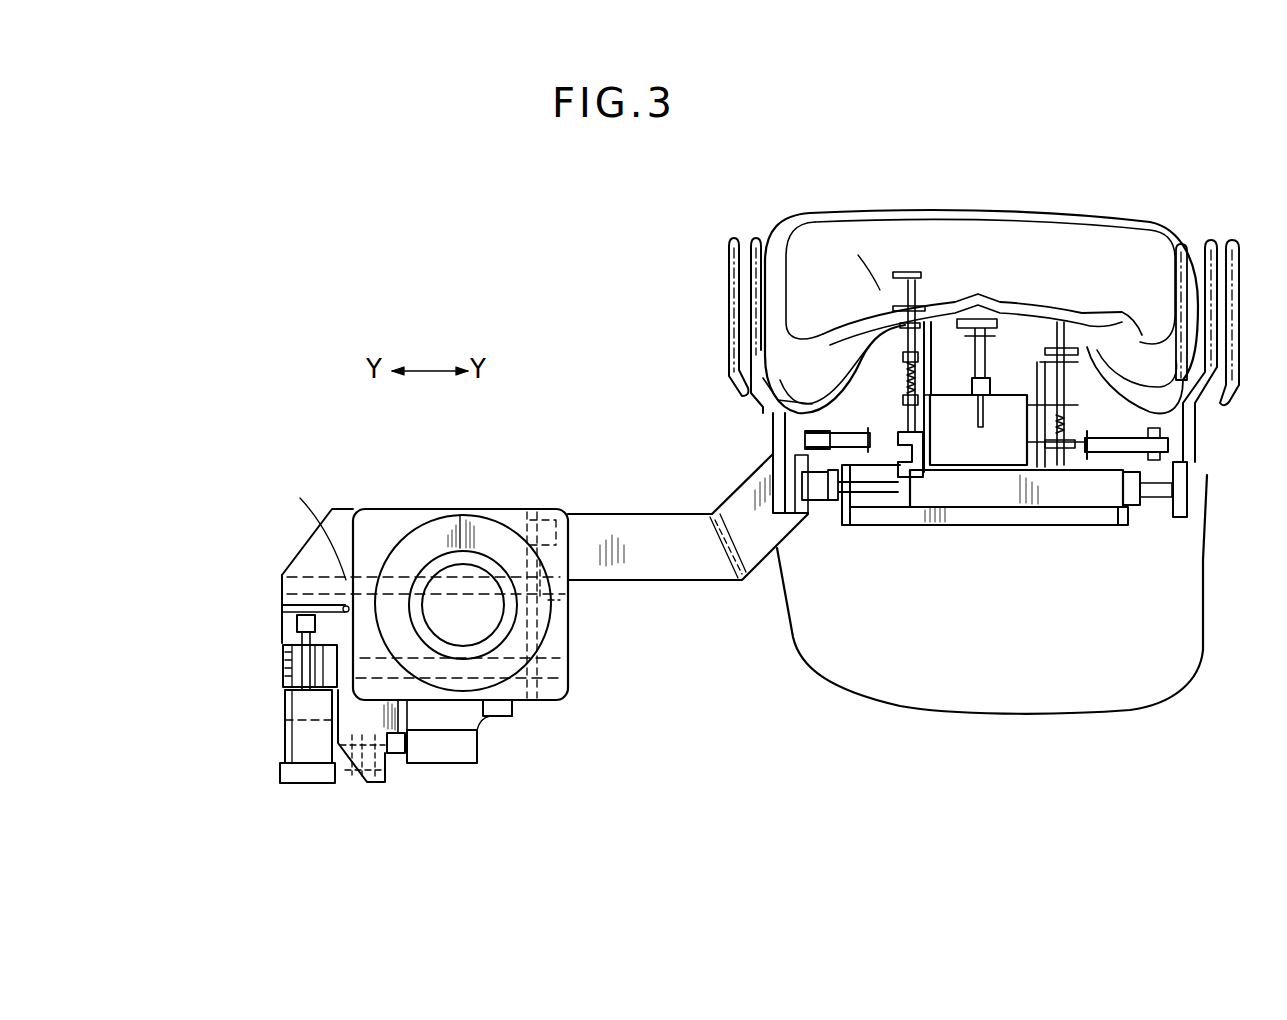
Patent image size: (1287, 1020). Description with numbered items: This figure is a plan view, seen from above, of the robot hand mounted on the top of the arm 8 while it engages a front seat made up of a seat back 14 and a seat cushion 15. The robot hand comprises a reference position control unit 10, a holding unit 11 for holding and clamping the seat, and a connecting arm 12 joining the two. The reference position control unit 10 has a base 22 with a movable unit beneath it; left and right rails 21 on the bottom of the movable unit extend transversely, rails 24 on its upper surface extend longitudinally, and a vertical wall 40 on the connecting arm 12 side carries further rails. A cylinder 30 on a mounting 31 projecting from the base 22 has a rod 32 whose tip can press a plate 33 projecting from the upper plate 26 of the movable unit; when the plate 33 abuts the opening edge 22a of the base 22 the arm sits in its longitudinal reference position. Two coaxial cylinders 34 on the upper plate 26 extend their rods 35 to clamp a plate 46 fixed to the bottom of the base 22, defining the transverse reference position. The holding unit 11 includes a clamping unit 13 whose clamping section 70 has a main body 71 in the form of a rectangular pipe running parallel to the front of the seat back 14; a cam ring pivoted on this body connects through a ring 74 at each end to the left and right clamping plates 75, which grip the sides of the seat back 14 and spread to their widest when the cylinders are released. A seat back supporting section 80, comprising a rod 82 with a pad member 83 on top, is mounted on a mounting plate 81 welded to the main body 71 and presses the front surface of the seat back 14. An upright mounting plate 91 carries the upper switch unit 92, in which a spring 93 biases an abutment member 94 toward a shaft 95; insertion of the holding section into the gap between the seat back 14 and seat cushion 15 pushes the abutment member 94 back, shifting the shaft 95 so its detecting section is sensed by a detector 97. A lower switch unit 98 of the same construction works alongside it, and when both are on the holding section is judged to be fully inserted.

The arm 8 is at (456, 548).
The reference position control unit 10 is at (595, 662).
The holding unit 11 is at (902, 540).
The connecting arm 12 is at (725, 572).
The clamping unit 13 is at (963, 538).
The seat back 14 is at (1068, 218).
The seat cushion 15 is at (1110, 685).
The rails 21 is at (507, 718).
The base 22 is at (341, 503).
The opening edge 22a is at (302, 523).
The rails 24 is at (515, 707).
The upper plate 26 is at (292, 622).
The cylinder 30 is at (300, 700).
The mounting 31 is at (298, 668).
The rod 32 is at (292, 654).
The plate 33 is at (290, 602).
The cylinders 34 is at (335, 770).
The rods 35 is at (352, 778).
The vertical wall 40 is at (582, 617).
The plate 46 is at (392, 770).
The clamping section 70 is at (1068, 535).
The main body 71 is at (1013, 520).
The ring 74 is at (1125, 427).
The clamping plates 75 is at (738, 236).
The seat back supporting section 80 is at (968, 302).
The mounting plate 81 is at (958, 395).
The rod 82 is at (1020, 342).
The pad member 83 is at (1000, 340).
The mounting plate 91 is at (933, 330).
The upper switch unit 92 is at (880, 290).
The spring 93 is at (905, 350).
The abutment member 94 is at (905, 270).
The shaft 95 is at (905, 418).
The detector 97 is at (906, 434).
The lower switch unit 98 is at (1070, 308).